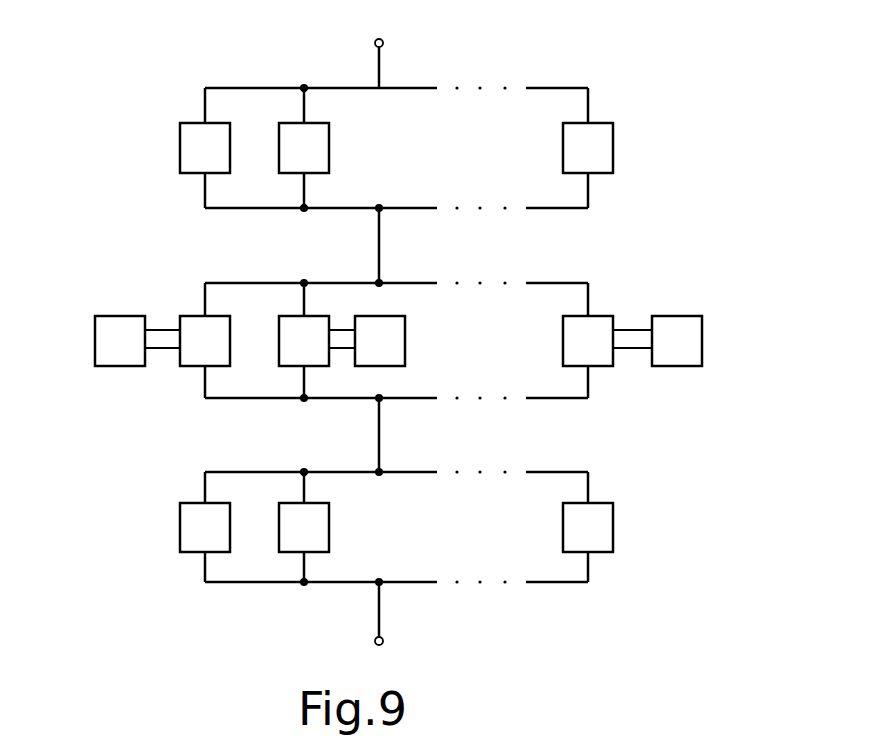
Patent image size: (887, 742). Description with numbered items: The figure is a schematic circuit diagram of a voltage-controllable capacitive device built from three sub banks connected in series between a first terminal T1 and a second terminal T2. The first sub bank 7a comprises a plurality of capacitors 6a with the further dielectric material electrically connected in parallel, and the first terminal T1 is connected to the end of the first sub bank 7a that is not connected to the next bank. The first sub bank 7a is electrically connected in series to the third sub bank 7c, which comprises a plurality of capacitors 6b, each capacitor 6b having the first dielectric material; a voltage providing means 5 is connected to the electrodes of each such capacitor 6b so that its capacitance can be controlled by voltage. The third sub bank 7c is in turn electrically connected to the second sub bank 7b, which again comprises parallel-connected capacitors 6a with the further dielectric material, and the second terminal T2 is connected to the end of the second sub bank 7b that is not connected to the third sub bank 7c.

The voltage providing means 5 is at (672, 313).
The capacitor with further dielectric material 6a is at (601, 503).
The second capacitor 6b is at (602, 315).
The first sub bank 7a is at (733, 88).
The second sub bank 7b is at (733, 472).
The third sub bank 7c is at (733, 283).
The first terminal T1 is at (375, 40).
The second terminal T2 is at (383, 643).